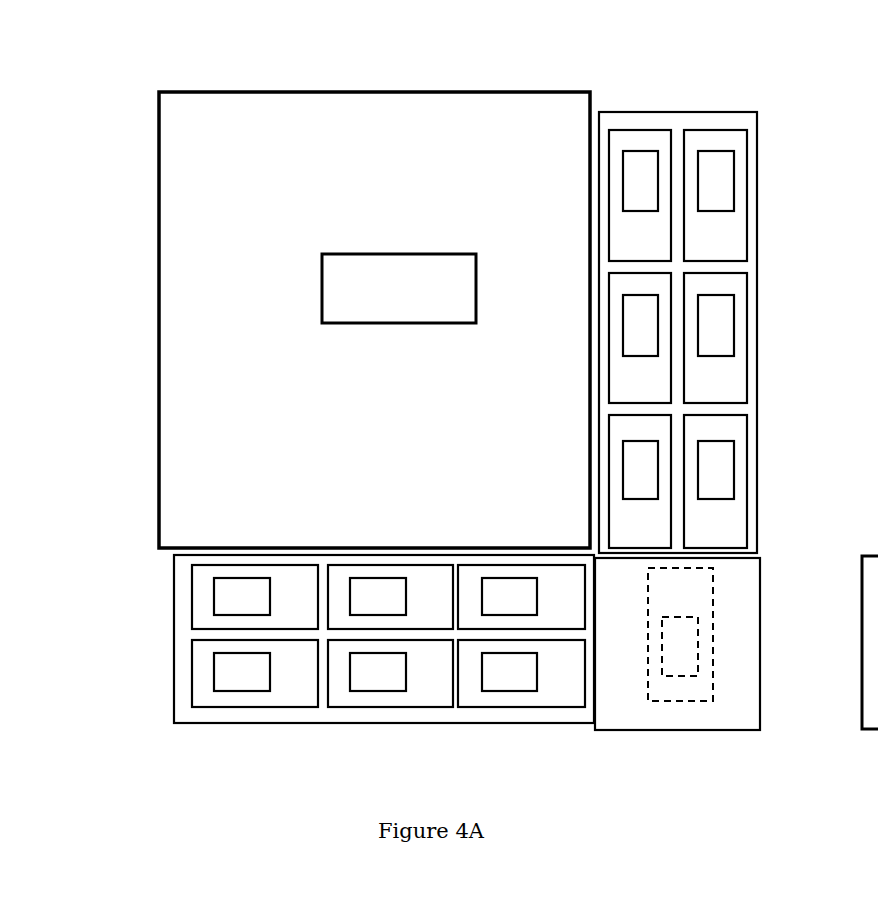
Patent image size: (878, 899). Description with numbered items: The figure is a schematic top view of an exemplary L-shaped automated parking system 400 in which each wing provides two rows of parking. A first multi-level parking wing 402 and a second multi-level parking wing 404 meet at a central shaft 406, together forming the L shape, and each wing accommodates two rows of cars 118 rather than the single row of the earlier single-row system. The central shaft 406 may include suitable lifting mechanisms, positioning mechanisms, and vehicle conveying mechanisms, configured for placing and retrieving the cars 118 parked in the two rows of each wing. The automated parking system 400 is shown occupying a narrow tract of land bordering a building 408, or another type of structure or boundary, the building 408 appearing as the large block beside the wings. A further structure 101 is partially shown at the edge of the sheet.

The processing system / facility layout 400 is at (688, 72).
The adjacent unit (partially shown) 101 is at (862, 151).
The processing module 118 is at (637, 380).
The module bank (bottom) 402 is at (423, 725).
The module bank (side) 404 is at (758, 307).
The transfer station 406 is at (671, 732).
The main chamber / platform 408 is at (380, 91).